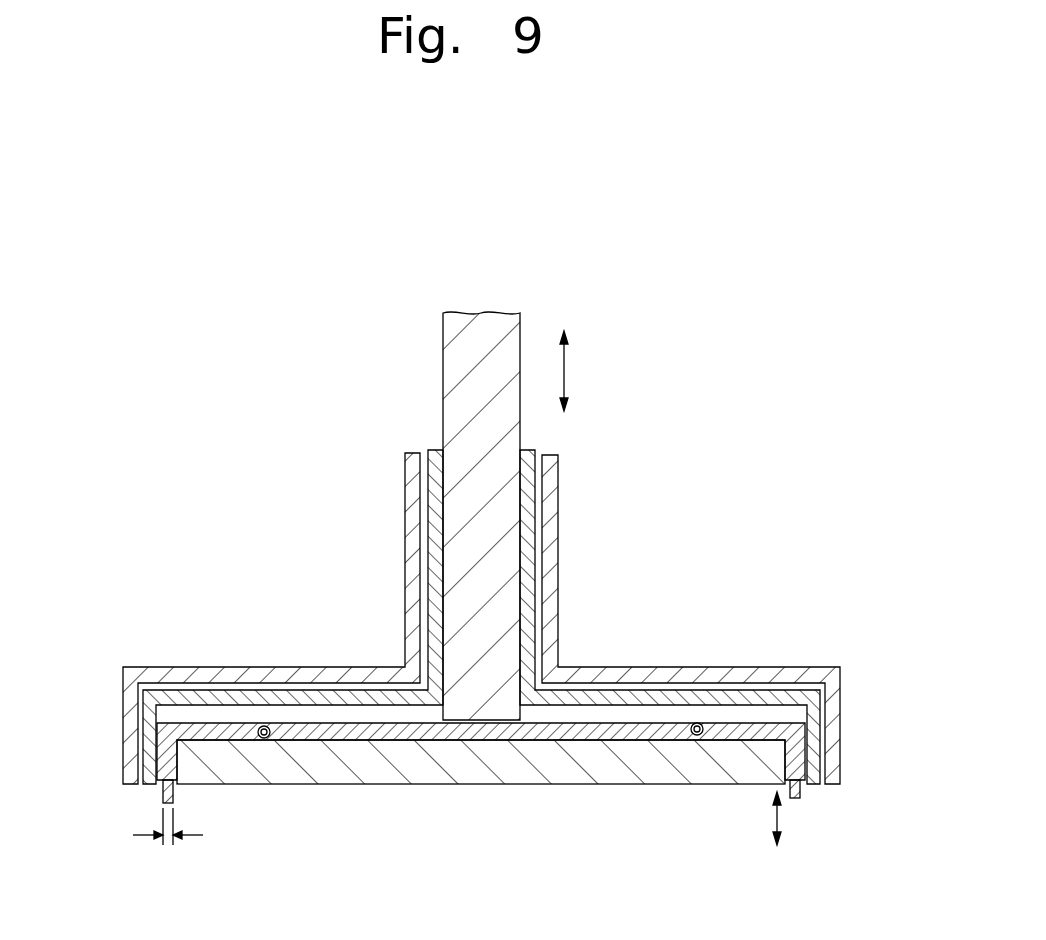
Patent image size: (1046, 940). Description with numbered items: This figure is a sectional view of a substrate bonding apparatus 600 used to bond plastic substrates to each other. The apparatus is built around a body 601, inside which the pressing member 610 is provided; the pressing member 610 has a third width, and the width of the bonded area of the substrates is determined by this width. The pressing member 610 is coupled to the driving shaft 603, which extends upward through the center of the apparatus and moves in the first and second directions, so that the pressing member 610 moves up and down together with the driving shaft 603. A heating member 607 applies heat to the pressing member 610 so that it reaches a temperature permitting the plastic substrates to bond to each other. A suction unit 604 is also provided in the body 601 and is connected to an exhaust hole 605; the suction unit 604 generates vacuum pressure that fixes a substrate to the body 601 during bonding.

The substrate bonding apparatus 600 is at (774, 232).
The body 601 is at (405, 548).
The driving shaft 603 is at (492, 333).
The suction unit 604 is at (141, 796).
The exhaust hole 605 is at (425, 452).
The heating member 607 is at (701, 722).
The pressing member 610 is at (177, 792).